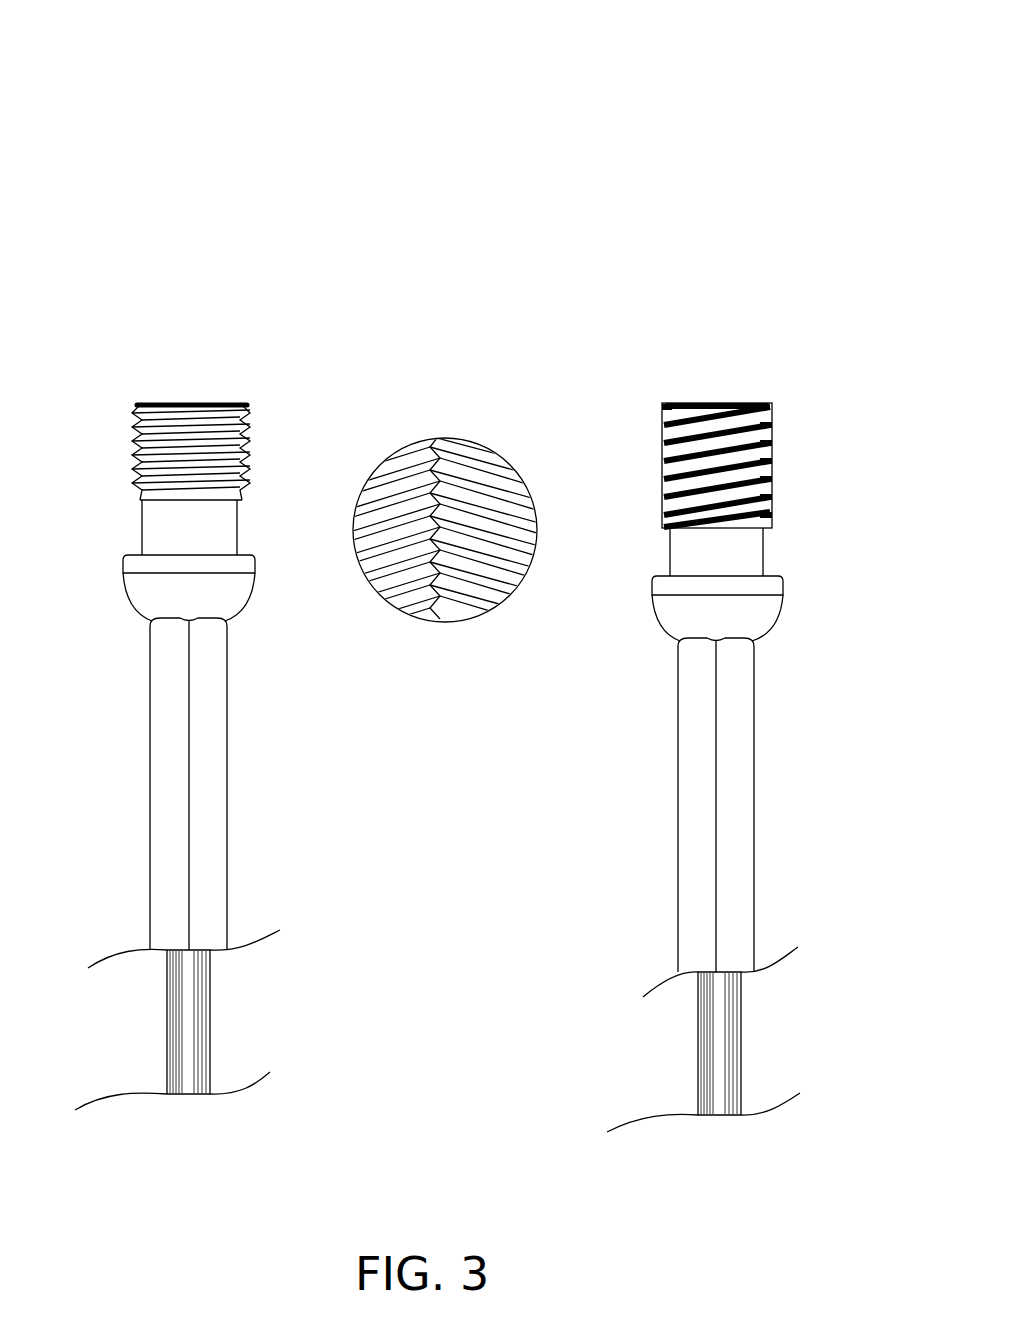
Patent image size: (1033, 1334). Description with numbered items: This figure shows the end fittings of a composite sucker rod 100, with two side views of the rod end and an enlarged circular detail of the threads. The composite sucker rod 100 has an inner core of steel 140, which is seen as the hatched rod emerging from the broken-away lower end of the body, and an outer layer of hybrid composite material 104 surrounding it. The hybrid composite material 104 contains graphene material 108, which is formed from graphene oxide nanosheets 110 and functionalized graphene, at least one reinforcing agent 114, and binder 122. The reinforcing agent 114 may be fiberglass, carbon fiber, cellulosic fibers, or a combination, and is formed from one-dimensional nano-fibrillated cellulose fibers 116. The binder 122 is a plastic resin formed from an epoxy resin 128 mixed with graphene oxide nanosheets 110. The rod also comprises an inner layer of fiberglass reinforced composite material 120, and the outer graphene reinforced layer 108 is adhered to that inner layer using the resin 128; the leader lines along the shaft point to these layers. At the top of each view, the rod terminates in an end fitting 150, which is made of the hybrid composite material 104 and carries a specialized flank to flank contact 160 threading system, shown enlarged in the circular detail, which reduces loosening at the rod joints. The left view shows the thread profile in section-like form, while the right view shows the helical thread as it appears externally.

The composite sucker rod 100 is at (650, 101).
The hybrid composite material 104 is at (251, 536).
The graphene material 108 is at (241, 652).
The graphene oxide nanosheets 110 is at (241, 705).
The reinforcing agent 114 is at (136, 706).
The one-dimensional nano-fibrillated cellulose fibers 116 is at (136, 762).
The inner layer of fiberglass reinforced composite material 120 is at (241, 792).
The binder 122 is at (136, 819).
The epoxy resin 128 is at (136, 877).
The inner core of steel 140 is at (225, 987).
The end fitting 150 is at (116, 539).
The flank to flank contact threading system 160 is at (438, 426).